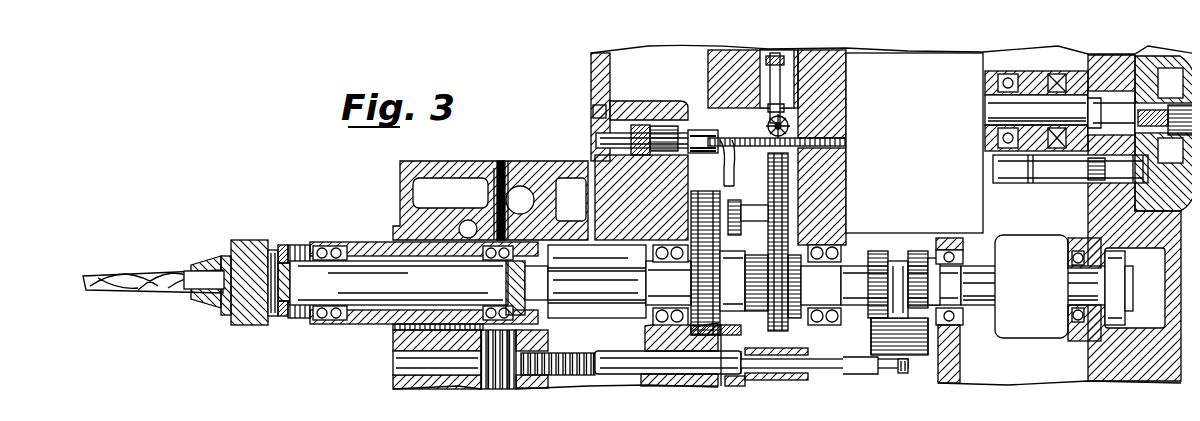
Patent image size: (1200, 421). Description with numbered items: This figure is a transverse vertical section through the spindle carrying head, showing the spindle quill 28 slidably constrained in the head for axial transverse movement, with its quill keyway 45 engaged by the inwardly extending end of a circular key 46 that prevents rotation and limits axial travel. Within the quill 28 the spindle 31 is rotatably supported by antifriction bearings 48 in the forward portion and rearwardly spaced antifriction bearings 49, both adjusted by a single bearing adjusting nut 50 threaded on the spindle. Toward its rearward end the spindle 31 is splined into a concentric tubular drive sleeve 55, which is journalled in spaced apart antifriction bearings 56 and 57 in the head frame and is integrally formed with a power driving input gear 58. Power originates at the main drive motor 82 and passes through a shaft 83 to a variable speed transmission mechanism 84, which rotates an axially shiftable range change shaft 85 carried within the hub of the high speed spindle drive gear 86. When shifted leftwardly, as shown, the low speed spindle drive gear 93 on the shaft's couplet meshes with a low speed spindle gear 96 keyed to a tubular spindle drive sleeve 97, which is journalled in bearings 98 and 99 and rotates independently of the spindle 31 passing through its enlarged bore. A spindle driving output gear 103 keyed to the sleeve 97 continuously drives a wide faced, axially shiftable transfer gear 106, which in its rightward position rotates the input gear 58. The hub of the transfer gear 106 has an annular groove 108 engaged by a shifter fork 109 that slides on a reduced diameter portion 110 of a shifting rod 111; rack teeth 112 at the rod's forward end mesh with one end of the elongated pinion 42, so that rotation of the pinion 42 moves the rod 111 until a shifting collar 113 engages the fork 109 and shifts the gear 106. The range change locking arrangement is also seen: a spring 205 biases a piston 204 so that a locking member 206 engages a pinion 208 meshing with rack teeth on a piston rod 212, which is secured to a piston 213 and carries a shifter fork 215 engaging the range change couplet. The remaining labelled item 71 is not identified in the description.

The spindle quill 28 is at (362, 238).
The spindle 31 is at (372, 300).
The elongated pinion 42 is at (500, 380).
The quill keyway 45 is at (426, 222).
The circular key 46 is at (490, 184).
The antifriction bearings 48 is at (305, 318).
The antifriction bearings 49 is at (466, 323).
The bearing adjusting nut 50 is at (528, 250).
The drive sleeve 55 is at (993, 258).
The antifriction bearing 56 is at (950, 315).
The antifriction bearing 57 is at (1063, 307).
The power driving input gear 58 is at (912, 243).
The housing 71 is at (825, 418).
The main drive motor 82 is at (1172, 50).
The shaft 83 is at (1070, 167).
The variable speed transmission mechanism 84 is at (958, 48).
The range change shaft 85 is at (738, 200).
The high speed spindle drive gear 86 is at (762, 152).
The low speed spindle drive gear 93 is at (700, 185).
The low speed spindle gear 96 is at (702, 318).
The tubular spindle drive sleeve 97 is at (745, 262).
The bearing 98 is at (648, 245).
The bearing 99 is at (828, 240).
The spindle driving output gear 103 is at (870, 246).
The transfer gear 106 is at (900, 358).
The annular groove 108 is at (770, 343).
The shifter fork 109 is at (742, 371).
The reduced diameter portion 110 is at (815, 362).
The shifting rod 111 is at (612, 352).
The rack teeth 112 is at (545, 346).
The shifting collar 113 is at (880, 366).
The piston 204 is at (762, 68).
The spring 205 is at (758, 53).
The locking member 206 is at (764, 100).
The pinion 208 is at (760, 118).
The piston rod 212 is at (676, 124).
The piston 213 is at (638, 124).
The shifter fork 215 is at (718, 130).